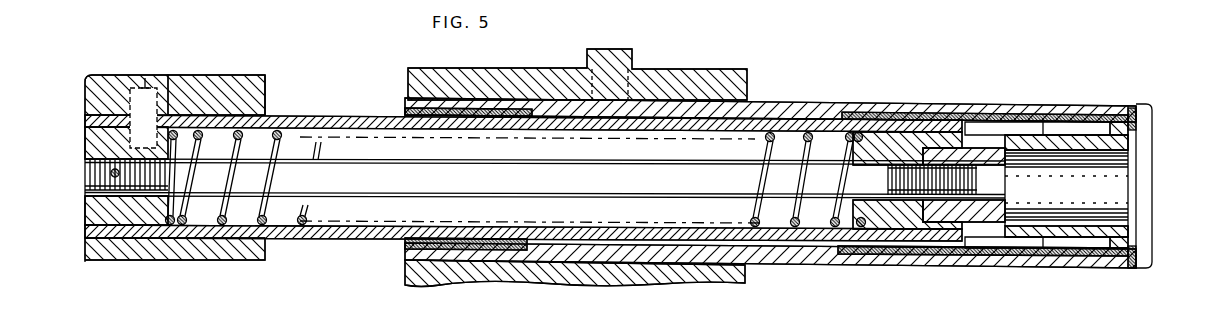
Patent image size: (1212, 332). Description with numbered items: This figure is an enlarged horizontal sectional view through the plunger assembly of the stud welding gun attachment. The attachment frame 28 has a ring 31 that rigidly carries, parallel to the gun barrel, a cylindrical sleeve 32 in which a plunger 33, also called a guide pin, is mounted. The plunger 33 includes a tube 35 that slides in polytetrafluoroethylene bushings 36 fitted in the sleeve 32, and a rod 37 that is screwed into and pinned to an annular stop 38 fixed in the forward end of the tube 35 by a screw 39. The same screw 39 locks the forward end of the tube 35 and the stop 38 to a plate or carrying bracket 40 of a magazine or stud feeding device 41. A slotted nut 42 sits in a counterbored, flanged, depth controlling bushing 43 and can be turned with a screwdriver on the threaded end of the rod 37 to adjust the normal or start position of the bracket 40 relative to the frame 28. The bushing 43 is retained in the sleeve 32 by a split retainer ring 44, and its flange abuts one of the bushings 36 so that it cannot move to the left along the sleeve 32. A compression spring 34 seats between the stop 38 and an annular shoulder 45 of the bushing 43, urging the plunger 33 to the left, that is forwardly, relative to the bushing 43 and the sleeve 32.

The attachment frame 28 is at (750, 285).
The ring 31 is at (747, 70).
The cylindrical sleeve 32 is at (805, 100).
The plunger 33 is at (312, 242).
The compression spring 34 is at (766, 152).
The tube 35 is at (322, 116).
The polytetrafluoroethylene bushings 36 is at (390, 256).
The rod 37 is at (565, 163).
The annular stop 38 is at (86, 202).
The screw 39 is at (150, 82).
The carrying bracket 40 is at (200, 78).
The stud feeding device 41 is at (270, 73).
The slotted nut 42 is at (1005, 215).
The depth controlling bushing 43 is at (1132, 108).
The split retainer ring 44 is at (1152, 124).
The annular shoulder 45 is at (861, 229).